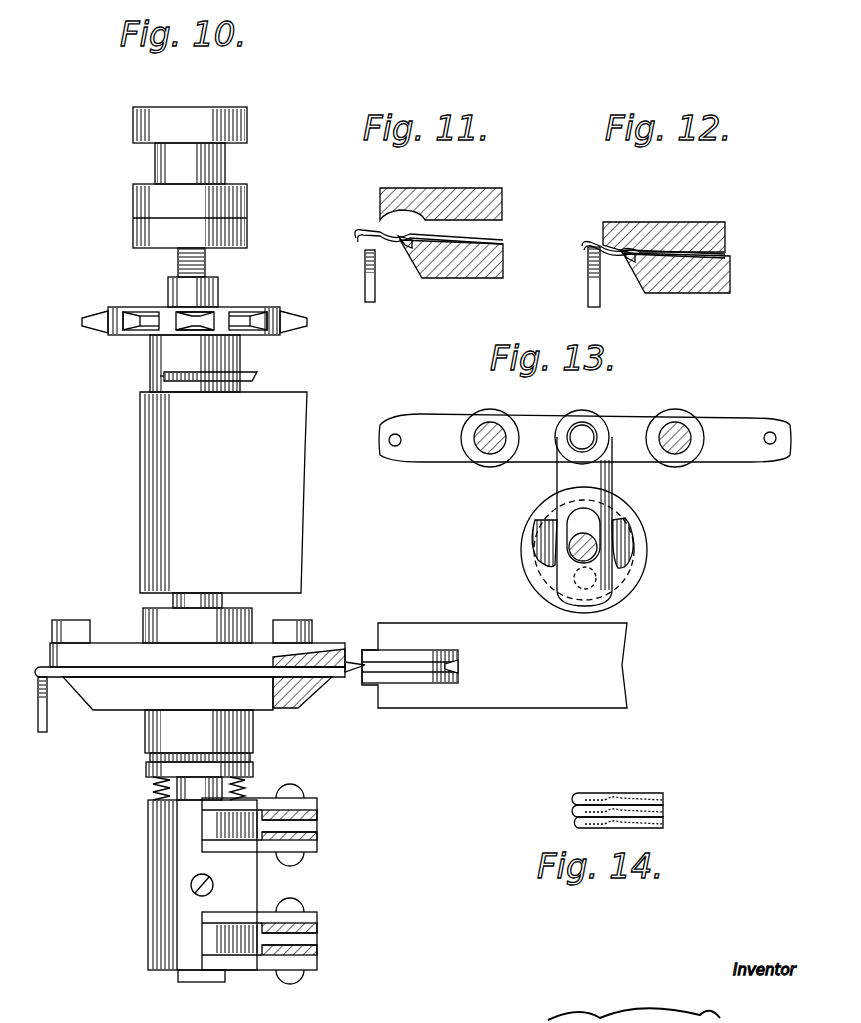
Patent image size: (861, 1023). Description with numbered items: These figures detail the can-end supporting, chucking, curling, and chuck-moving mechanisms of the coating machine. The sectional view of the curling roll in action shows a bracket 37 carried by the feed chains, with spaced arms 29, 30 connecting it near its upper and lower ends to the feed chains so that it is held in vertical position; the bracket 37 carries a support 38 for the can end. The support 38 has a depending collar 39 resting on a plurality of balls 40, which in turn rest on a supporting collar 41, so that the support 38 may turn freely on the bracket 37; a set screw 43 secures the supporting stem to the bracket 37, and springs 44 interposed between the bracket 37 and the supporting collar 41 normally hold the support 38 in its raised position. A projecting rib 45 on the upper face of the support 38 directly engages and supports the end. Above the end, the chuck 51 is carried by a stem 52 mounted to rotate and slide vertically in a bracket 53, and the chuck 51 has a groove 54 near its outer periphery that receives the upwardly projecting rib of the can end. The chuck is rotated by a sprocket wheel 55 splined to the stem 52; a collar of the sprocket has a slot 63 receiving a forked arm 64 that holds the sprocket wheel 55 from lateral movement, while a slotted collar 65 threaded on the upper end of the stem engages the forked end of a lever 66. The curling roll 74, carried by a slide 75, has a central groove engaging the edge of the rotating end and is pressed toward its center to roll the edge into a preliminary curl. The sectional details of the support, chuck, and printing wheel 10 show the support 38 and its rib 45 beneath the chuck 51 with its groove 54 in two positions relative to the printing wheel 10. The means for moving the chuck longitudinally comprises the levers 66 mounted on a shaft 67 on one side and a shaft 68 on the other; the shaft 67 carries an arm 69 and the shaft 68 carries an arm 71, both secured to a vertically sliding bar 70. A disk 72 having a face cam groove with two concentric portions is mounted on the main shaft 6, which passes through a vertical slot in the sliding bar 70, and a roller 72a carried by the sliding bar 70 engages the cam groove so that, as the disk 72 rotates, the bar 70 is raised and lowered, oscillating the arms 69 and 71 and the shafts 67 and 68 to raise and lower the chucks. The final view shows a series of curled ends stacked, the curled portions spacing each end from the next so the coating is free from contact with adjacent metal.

In FIG. 13, the main shaft 6 is at (592, 540).
In FIG. 10, the printing wheel 10 is at (46, 714).
In FIG. 11, the printing wheel 10 is at (365, 268).
In FIG. 12, the printing wheel 10 is at (588, 276).
In FIG. 10, the upper bracket 29 is at (317, 820).
In FIG. 10, the lower bracket 30 is at (317, 920).
In FIG. 10, the bracket 37 is at (180, 869).
In FIG. 10, the support 38 is at (168, 693).
In FIG. 11, the support 38 is at (453, 270).
In FIG. 12, the support 38 is at (661, 285).
In FIG. 10, the depending collar 39 is at (253, 728).
In FIG. 10, the balls 40 is at (251, 757).
In FIG. 10, the supporting collar 41 is at (254, 770).
In FIG. 10, the set screw 43 is at (195, 893).
In FIG. 10, the springs 44 is at (152, 790).
In FIG. 10, the projecting rib 45 is at (322, 680).
In FIG. 11, the projecting rib 45 is at (402, 250).
In FIG. 12, the projecting rib 45 is at (626, 262).
In FIG. 10, the chuck 51 is at (197, 654).
In FIG. 11, the chuck 51 is at (458, 196).
In FIG. 12, the chuck 51 is at (690, 224).
In FIG. 10, the stem 52 is at (199, 600).
In FIG. 10, the bracket 53 is at (223, 492).
In FIG. 10, the groove 54 is at (336, 654).
In FIG. 11, the groove 54 is at (380, 214).
In FIG. 12, the groove 54 is at (653, 250).
In FIG. 10, the sprocket wheel 55 is at (120, 316).
In FIG. 10, the slot 63 is at (128, 385).
In FIG. 10, the forked arm 64 is at (246, 377).
In FIG. 10, the slotted collar 65 is at (246, 193).
In FIG. 13, the lever 66 is at (582, 440).
In FIG. 13, the shaft 67 is at (490, 427).
In FIG. 13, the shaft 68 is at (676, 427).
In FIG. 13, the arm 69 is at (531, 418).
In FIG. 13, the sliding bar 70 is at (565, 480).
In FIG. 13, the arm 71 is at (629, 416).
In FIG. 13, the disk 72 is at (530, 548).
In FIG. 13, the roller 72a is at (588, 584).
In FIG. 10, the curling roll 74 is at (400, 650).
In FIG. 10, the slide 75 is at (478, 686).